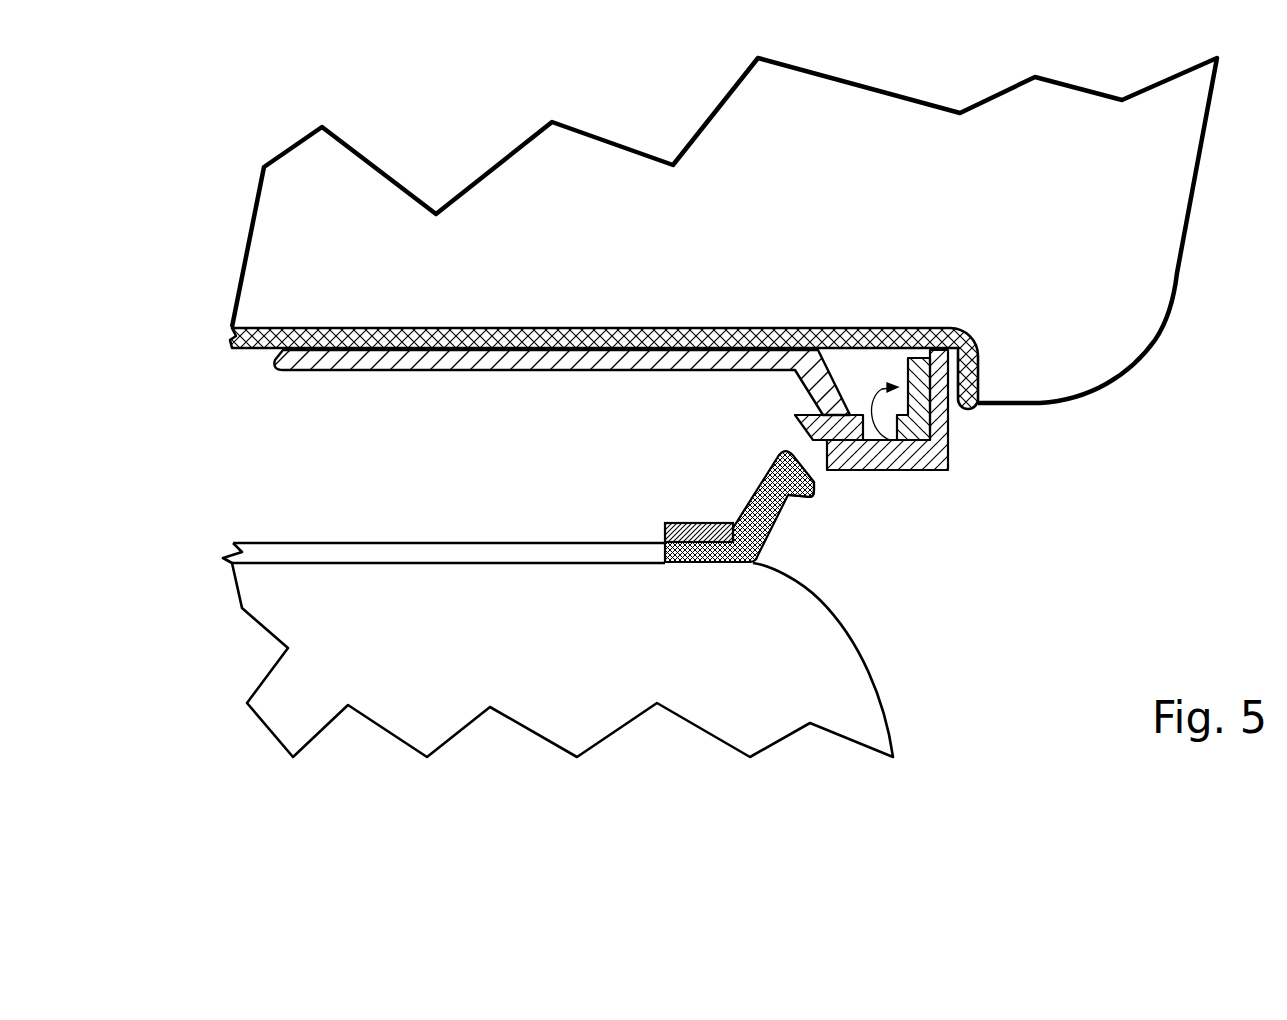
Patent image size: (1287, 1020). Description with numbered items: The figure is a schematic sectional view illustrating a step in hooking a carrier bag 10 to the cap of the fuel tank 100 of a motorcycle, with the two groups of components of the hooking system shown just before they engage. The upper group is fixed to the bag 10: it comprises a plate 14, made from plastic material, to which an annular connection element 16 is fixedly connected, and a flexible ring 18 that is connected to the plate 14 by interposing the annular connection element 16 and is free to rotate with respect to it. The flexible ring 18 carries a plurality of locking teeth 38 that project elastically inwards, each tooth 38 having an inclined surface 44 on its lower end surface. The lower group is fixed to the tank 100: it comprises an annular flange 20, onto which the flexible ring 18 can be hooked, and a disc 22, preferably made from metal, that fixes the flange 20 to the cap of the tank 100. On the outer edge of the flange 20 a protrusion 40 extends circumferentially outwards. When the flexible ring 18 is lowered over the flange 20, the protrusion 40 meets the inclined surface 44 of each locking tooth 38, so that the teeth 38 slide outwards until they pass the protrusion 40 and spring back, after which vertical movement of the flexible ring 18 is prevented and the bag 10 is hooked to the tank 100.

The carrier bag 10 is at (1150, 340).
The plate 14 is at (248, 349).
The annular connection element 16 is at (475, 371).
The flexible ring 18 is at (950, 438).
The annular flange 20 is at (761, 558).
The disc 22 is at (690, 520).
The locking tooth 38 is at (795, 414).
The protrusion 40 is at (793, 496).
The inclined surface 44 is at (778, 402).
The fuel tank 100 is at (872, 683).